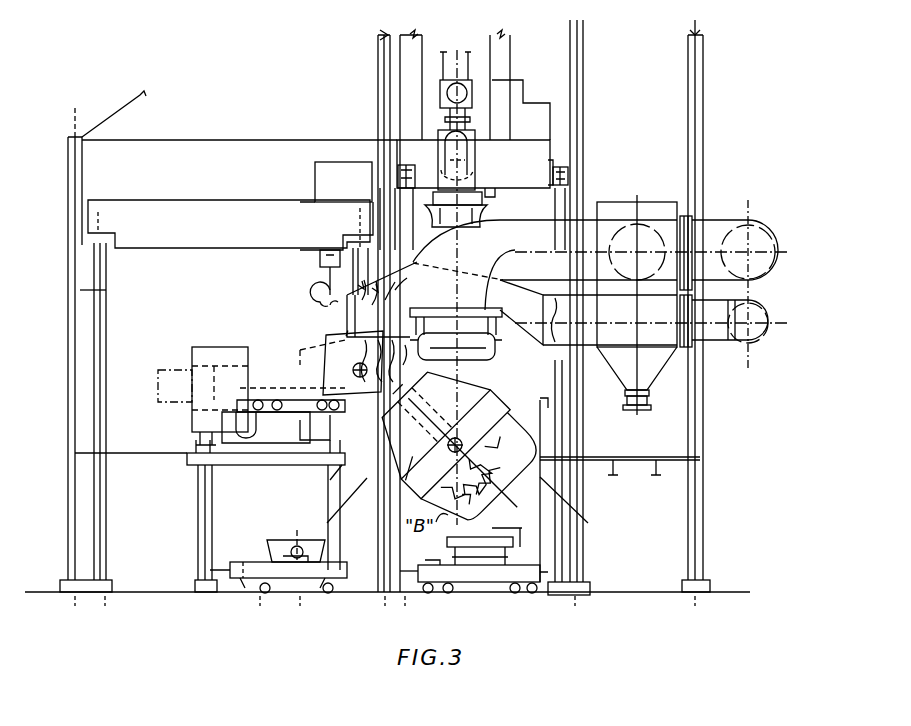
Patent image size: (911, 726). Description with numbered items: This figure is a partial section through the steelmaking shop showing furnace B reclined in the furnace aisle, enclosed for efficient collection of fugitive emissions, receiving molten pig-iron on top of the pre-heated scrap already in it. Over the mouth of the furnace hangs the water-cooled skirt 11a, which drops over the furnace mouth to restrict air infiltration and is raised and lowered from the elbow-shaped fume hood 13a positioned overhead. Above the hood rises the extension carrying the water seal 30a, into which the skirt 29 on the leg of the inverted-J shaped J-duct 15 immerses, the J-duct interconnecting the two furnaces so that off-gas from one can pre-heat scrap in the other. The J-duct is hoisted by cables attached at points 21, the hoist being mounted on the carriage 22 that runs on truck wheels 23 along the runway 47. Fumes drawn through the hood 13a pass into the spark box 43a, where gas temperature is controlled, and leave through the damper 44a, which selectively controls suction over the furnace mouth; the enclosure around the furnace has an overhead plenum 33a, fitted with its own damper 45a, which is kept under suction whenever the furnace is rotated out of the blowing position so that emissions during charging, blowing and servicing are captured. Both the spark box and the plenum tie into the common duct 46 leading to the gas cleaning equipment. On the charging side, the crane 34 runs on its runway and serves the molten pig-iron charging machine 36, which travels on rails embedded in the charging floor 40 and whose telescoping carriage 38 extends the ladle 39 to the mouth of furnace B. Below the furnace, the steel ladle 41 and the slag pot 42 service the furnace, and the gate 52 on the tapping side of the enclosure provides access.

The skirt 11a is at (490, 365).
The fume hood 13a is at (595, 205).
The J-duct 15 is at (438, 170).
The cable attachment points 21 is at (447, 117).
The carriage 22 is at (525, 172).
The truck wheels 23 is at (565, 176).
The skirt 29 is at (478, 202).
The water seal 30a is at (482, 218).
The plenum 33a is at (328, 292).
The crane 34 is at (274, 240).
The molten pig-iron charging machine 36 is at (192, 406).
The telescoping carriage 38 is at (252, 352).
The ladle 39 is at (332, 346).
The charging floor 40 is at (272, 458).
The steel ladle 41 is at (520, 562).
The slag pot 42 is at (262, 562).
The spark box 43a is at (645, 200).
The damper 44a is at (690, 216).
The damper 45a is at (680, 352).
The common duct 46 is at (770, 240).
The runway 47 is at (398, 181).
The gate 52 is at (547, 448).